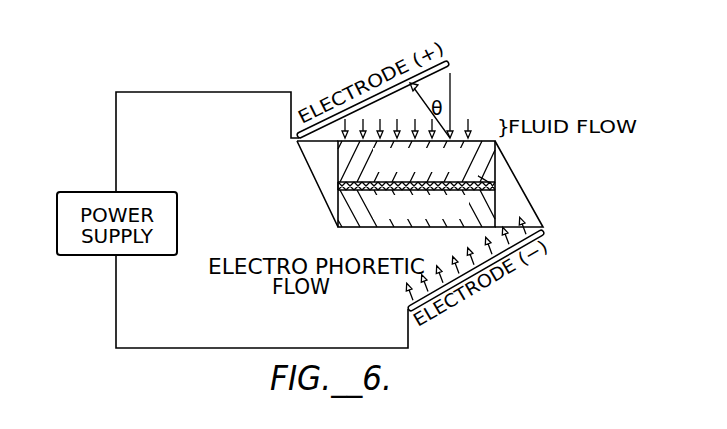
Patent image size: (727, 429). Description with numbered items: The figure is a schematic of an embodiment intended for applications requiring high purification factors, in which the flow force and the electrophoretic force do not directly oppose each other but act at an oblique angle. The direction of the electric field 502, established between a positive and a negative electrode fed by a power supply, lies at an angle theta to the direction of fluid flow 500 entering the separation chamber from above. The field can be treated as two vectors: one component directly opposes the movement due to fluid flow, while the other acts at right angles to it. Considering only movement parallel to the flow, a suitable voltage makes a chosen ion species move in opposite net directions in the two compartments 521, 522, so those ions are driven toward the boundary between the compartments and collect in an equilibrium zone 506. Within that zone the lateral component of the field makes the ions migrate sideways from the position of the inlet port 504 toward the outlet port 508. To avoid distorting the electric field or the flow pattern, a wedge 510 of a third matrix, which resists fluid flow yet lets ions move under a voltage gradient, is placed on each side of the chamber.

The fluid flow 500 is at (467, 127).
The electric field 502 is at (452, 247).
The inlet port 504 is at (490, 187).
The equilibrium zone 506 is at (484, 176).
The outlet port 508 is at (338, 186).
The wedge 510 is at (312, 150).
The first compartment 521 is at (481, 157).
The second compartment 522 is at (483, 205).